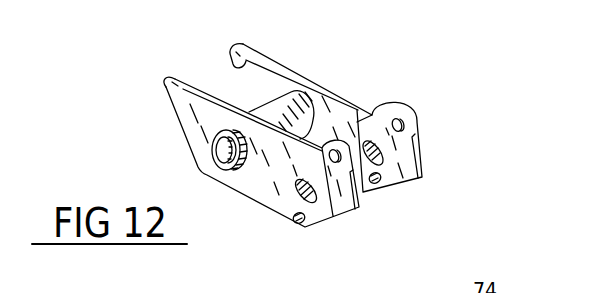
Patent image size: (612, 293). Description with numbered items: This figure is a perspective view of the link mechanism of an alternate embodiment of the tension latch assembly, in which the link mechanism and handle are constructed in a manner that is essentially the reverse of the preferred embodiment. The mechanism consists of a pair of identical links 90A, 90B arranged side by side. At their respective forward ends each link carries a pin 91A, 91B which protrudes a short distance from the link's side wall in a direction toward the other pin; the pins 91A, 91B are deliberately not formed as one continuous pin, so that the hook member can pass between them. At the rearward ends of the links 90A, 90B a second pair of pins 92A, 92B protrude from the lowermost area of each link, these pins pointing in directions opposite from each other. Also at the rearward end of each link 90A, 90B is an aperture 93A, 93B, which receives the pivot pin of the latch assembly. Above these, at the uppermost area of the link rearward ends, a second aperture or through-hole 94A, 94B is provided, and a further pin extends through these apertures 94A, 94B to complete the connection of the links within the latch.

The link 90A is at (245, 231).
The link 90B is at (340, 60).
The pin 91A is at (195, 77).
The pin 91B is at (231, 62).
The second pin 92A is at (300, 224).
The second pin 92B is at (382, 183).
The aperture 93A is at (296, 183).
The aperture 93B is at (366, 112).
The second aperture or through-hole 94A is at (334, 162).
The second aperture or through-hole 94B is at (401, 125).